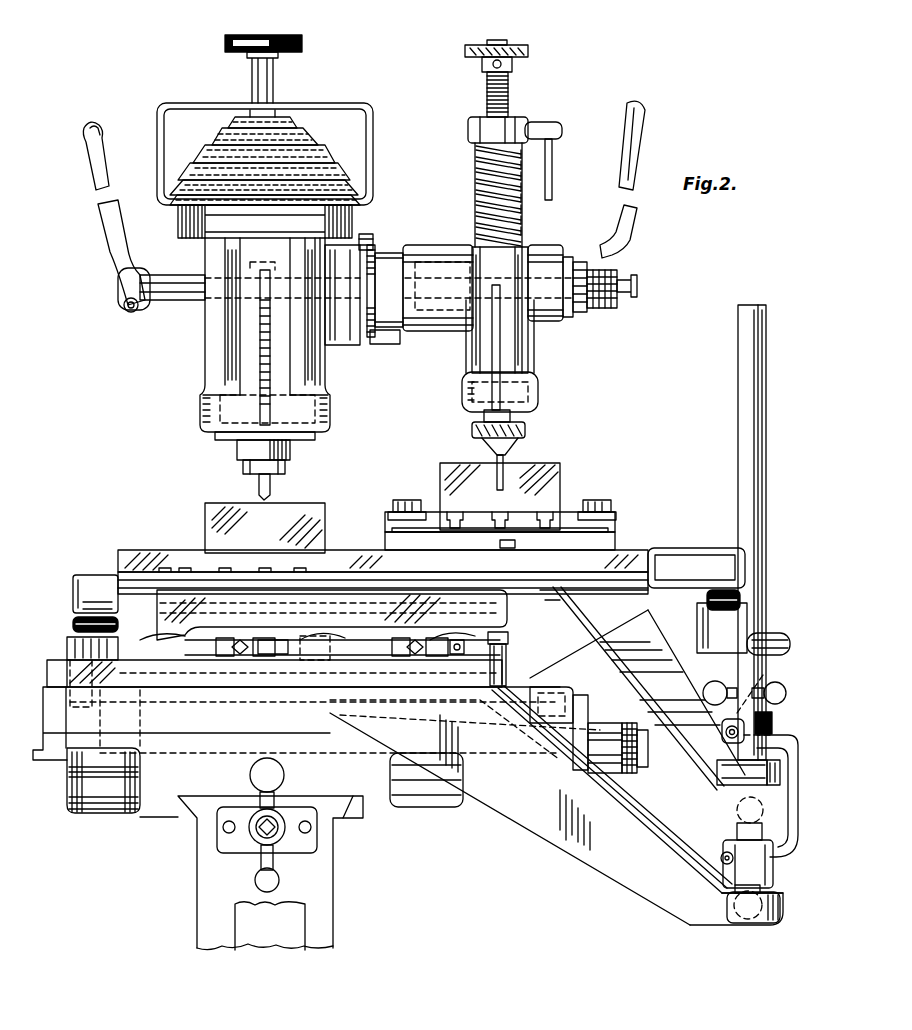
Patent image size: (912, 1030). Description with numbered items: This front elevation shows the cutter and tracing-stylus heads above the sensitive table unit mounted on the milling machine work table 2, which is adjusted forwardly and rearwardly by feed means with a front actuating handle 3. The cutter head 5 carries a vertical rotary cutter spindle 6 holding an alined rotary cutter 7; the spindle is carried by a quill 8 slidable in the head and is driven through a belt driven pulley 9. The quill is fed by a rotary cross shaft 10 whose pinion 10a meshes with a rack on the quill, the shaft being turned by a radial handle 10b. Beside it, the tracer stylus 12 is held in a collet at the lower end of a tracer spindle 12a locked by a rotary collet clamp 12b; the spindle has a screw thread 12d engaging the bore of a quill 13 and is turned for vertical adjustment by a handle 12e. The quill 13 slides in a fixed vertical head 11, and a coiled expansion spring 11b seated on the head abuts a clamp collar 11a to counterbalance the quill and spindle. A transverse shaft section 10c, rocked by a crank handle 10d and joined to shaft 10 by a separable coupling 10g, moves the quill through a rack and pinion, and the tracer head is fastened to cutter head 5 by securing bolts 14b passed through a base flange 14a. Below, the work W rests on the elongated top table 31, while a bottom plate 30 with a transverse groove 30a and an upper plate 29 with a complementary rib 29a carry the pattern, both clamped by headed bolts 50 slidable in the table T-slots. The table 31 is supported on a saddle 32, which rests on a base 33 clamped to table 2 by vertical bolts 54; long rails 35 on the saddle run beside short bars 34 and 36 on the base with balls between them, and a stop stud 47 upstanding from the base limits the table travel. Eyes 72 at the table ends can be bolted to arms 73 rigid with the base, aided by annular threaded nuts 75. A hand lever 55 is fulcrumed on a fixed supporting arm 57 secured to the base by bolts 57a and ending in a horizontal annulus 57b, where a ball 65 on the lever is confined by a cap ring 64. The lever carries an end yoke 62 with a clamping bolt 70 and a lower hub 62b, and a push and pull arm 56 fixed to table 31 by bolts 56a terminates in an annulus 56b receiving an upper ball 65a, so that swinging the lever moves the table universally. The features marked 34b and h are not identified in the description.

The work table 2 is at (340, 752).
The front actuating handle 3 is at (335, 863).
The cutter head 5 is at (235, 345).
The rotary cutter spindle 6 is at (288, 468).
The rotary cutter 7 is at (258, 485).
The quill 8 is at (240, 445).
The belt driven pulley 9 is at (312, 172).
The rotary cross shaft 10 is at (158, 302).
The pinion 10a is at (240, 268).
The radial handle 10b is at (112, 238).
The transverse shaft section 10c is at (590, 302).
The crank handle 10d is at (647, 135).
The separable coupling 10g is at (438, 265).
The vertical head 11 is at (532, 350).
The clamp collar 11a is at (470, 130).
The coiled expansion spring 11b is at (474, 178).
The tracer stylus 12 is at (503, 470).
The tracer spindle 12a is at (508, 98).
The rotary collet clamp 12b is at (525, 430).
The screw thread 12d is at (512, 80).
The handle 12e is at (530, 52).
The quill 13 is at (524, 215).
The base flange 14a is at (392, 348).
The securing bolts 14b is at (374, 242).
The plate 29 is at (428, 510).
The rib 29a is at (522, 515).
The bottom plate 30 is at (388, 540).
The transverse groove 30a is at (505, 548).
The work table 31 is at (138, 538).
The saddle 32 is at (180, 632).
The base 33 is at (274, 673).
The bar 34 is at (248, 658).
The screw end 34b is at (200, 690).
The rail 35 is at (560, 638).
The bar 36 is at (435, 658).
The stop stud 47 is at (282, 652).
The headed bolts 50 is at (400, 485).
The vertical bolts 54 is at (67, 648).
The lever 55 is at (740, 453).
The push and pull arm 56 is at (637, 688).
The bolts 56a is at (640, 588).
The annulus 56b is at (768, 800).
The supporting arm 57 is at (620, 870).
The bolts 57a is at (430, 700).
The annulus 57b is at (775, 922).
The end yoke 62 is at (808, 760).
The lower hub 62b is at (723, 850).
The cap ring 64 is at (778, 893).
The ball 65 is at (740, 915).
The ball 65a is at (738, 818).
The clamping bolt 70 is at (722, 732).
The eyes 72 is at (84, 575).
The arms 73 is at (697, 640).
The annular threaded nuts 75 is at (76, 625).
The work block h is at (560, 485).
The work W is at (325, 520).